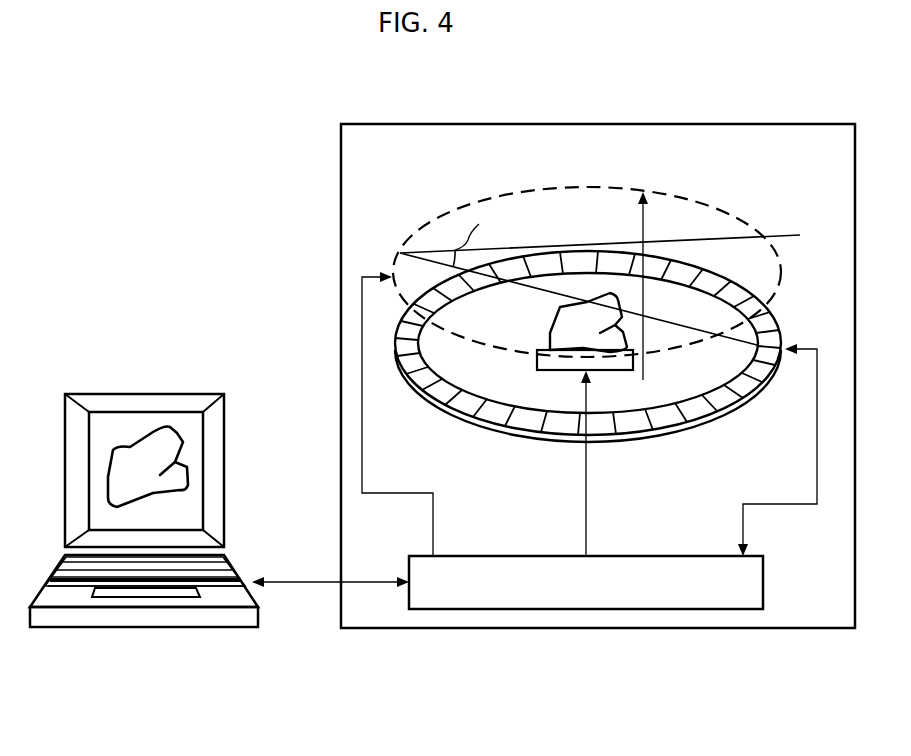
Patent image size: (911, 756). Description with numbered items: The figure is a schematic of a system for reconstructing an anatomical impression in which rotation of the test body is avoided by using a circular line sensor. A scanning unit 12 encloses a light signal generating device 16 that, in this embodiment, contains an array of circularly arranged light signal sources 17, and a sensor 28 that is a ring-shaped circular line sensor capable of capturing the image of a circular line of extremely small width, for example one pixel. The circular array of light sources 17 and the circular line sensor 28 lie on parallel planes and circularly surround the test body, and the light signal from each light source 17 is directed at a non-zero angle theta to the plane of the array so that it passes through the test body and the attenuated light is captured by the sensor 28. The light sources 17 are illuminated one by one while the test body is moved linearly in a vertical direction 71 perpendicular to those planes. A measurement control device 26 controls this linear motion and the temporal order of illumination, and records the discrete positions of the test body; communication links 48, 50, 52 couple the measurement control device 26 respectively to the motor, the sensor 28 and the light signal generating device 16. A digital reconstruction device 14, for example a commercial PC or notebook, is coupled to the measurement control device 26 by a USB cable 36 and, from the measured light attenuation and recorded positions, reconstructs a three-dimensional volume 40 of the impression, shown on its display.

The scanning unit 12 is at (358, 112).
The digital reconstruction device 14 is at (177, 370).
The light signal generating device 16 is at (760, 195).
The light signal sources 17 is at (470, 209).
The measurement control device 26 is at (763, 582).
The sensor 28 is at (785, 340).
The USB cable 36 is at (306, 581).
The three-dimensional volume 40 is at (185, 441).
The communication link 48 is at (586, 495).
The communication link 50 is at (817, 453).
The communication link 52 is at (362, 460).
The rotation axis 71 is at (645, 234).